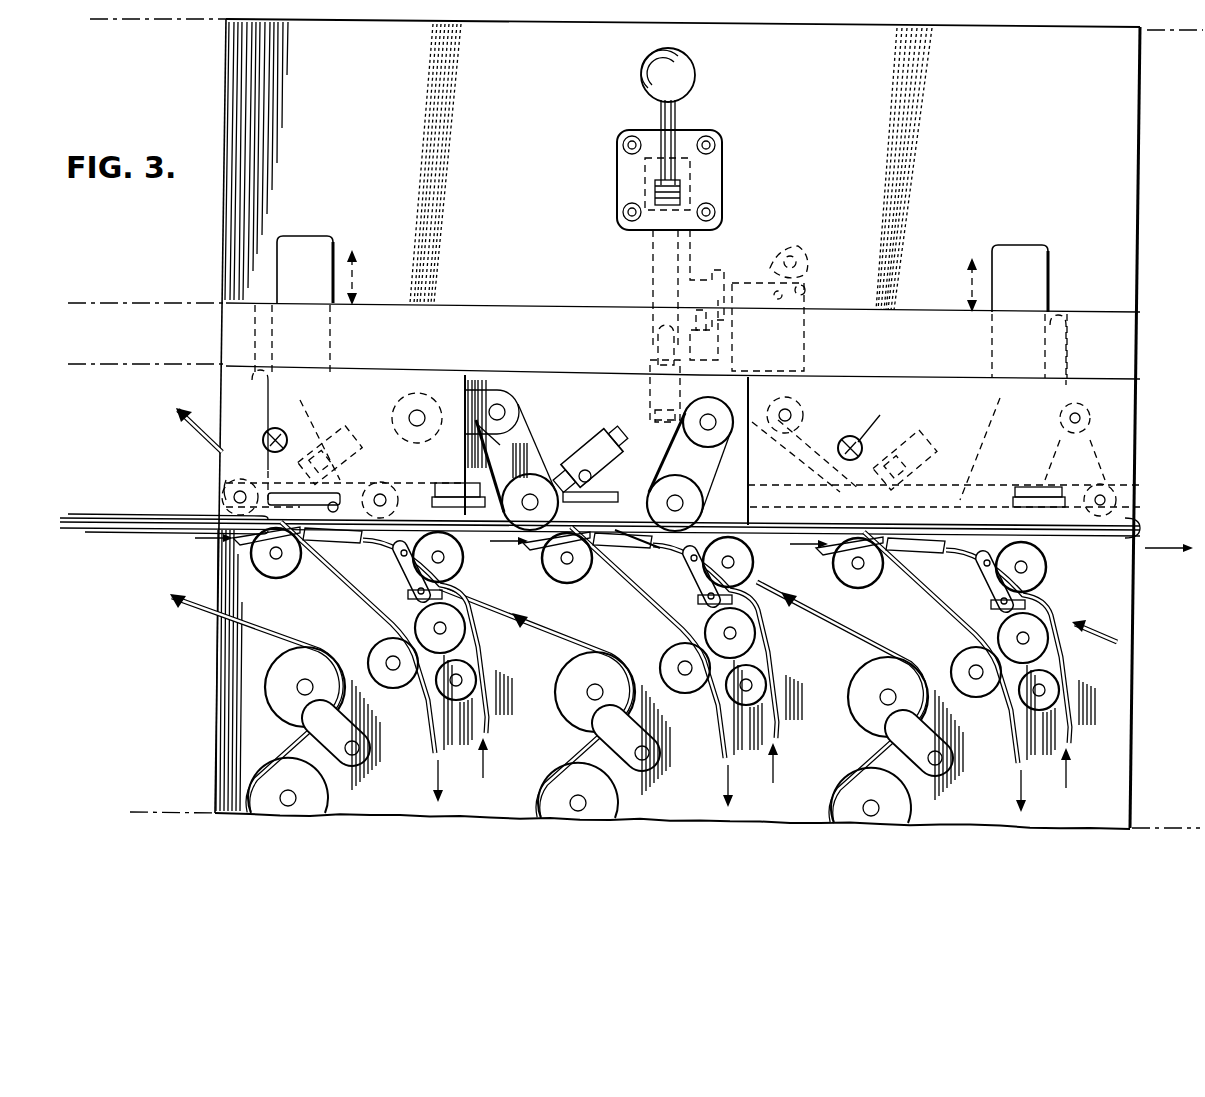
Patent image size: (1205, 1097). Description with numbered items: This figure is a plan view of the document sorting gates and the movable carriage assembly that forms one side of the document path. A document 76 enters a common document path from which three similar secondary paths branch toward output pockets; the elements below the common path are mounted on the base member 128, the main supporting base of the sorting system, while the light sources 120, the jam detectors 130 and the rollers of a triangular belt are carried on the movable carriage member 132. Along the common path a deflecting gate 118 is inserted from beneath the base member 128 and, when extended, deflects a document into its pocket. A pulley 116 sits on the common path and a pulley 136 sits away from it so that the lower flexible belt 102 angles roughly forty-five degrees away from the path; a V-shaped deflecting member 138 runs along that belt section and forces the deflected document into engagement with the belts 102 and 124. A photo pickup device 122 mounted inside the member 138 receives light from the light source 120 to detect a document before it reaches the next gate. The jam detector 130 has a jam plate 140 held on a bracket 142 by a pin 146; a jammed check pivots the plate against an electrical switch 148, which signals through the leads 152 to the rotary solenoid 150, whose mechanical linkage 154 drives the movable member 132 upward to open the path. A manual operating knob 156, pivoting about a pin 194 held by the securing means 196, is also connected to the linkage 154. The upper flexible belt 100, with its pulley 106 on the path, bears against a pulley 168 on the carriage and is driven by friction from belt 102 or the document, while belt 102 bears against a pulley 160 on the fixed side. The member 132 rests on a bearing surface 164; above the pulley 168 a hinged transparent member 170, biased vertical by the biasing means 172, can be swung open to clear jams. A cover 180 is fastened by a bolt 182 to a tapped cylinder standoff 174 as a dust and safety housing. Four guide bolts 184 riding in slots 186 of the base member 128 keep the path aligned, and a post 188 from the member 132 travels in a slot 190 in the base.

The document 76 is at (73, 530).
The upper flexible belt 100 is at (197, 448).
The lower flexible belt 102 is at (290, 639).
The pulley 106 is at (226, 490).
The pulley 116 is at (276, 578).
The deflecting gate 118 is at (332, 564).
The light source 120 is at (350, 455).
The photo pickup device 122 is at (395, 561).
The belt 124 is at (495, 718).
The base member 128 is at (232, 92).
The document jam detector 130 is at (235, 537).
The movable carriage member 132 is at (455, 305).
The pulley 136 is at (690, 690).
The V-shaped deflecting member 138 is at (382, 650).
The jam plate 140 is at (550, 572).
The bracket 142 is at (650, 475).
The pin 146 is at (648, 545).
The electrical switch 148 is at (560, 470).
The rotary solenoid 150 is at (812, 318).
The electrical output leads 152 is at (795, 270).
The mechanical linkage 154 is at (712, 280).
The mechanical operating knob 156 is at (650, 82).
The pulley 160 is at (455, 570).
The bearing surface 164 is at (302, 239).
The pulley 168 is at (700, 480).
The transparent member 170 is at (400, 490).
The biasing means 172 is at (470, 490).
The tapped cylinder standoff 174 is at (283, 430).
The cover 180 is at (402, 384).
The bolt 182 is at (857, 440).
The guide bolt 184 is at (258, 383).
The slot 186 is at (252, 322).
The post 188 is at (655, 404).
The slot 190 is at (655, 348).
The pin 194 is at (648, 188).
The securing means 196 is at (620, 160).